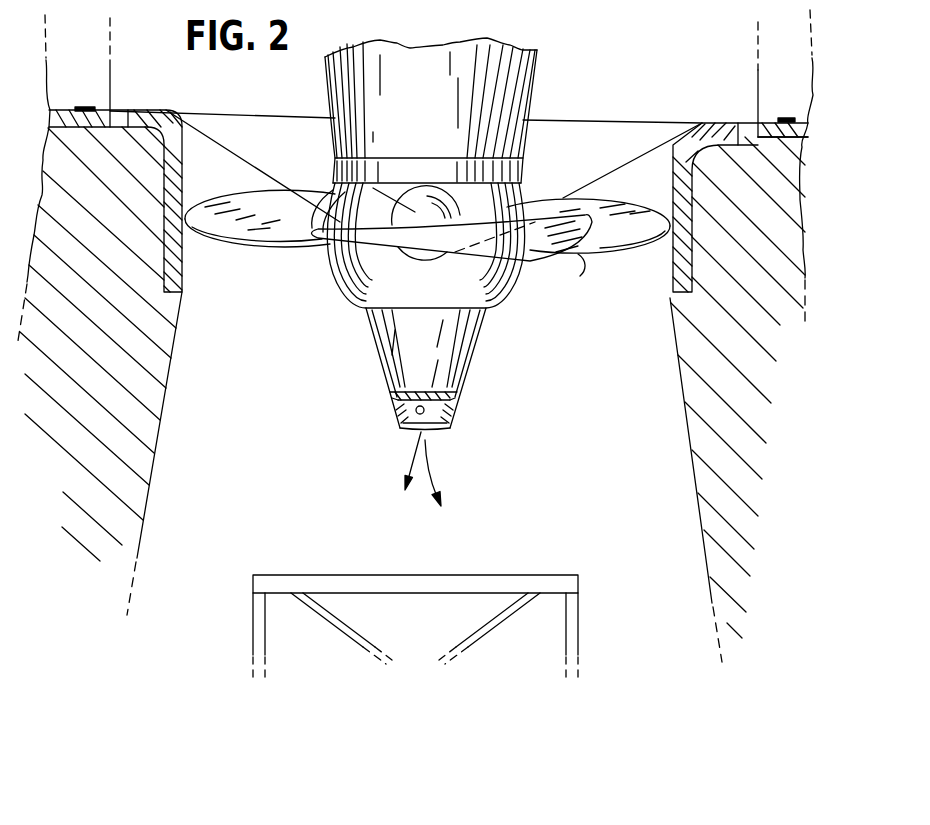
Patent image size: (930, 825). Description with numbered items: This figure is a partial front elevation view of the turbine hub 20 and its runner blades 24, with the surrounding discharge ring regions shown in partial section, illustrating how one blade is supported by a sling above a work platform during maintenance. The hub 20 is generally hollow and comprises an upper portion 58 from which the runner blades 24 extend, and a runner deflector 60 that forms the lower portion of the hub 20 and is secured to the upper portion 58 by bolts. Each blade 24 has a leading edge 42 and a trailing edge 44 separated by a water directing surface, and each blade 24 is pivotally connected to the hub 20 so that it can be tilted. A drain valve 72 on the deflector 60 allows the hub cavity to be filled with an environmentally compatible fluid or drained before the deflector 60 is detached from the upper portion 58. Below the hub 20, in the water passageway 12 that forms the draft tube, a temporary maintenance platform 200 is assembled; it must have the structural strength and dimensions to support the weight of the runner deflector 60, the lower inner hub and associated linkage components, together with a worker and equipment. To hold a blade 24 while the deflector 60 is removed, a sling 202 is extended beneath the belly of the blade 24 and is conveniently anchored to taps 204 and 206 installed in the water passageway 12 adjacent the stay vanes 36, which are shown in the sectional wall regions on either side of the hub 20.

The passageway 12 is at (270, 525).
The hub 20 is at (513, 290).
The runner blades 24 is at (592, 252).
The stay vanes 36 is at (92, 69).
The leading edge 42 is at (258, 193).
The trailing edge 44 is at (277, 247).
The upper portion 58 is at (348, 283).
The runner deflector 60 is at (372, 348).
The drain valve 72 is at (436, 428).
The temporary maintenance platform 200 is at (535, 578).
The sling 202 is at (613, 175).
The tap 204 is at (93, 107).
The tap 206 is at (780, 122).